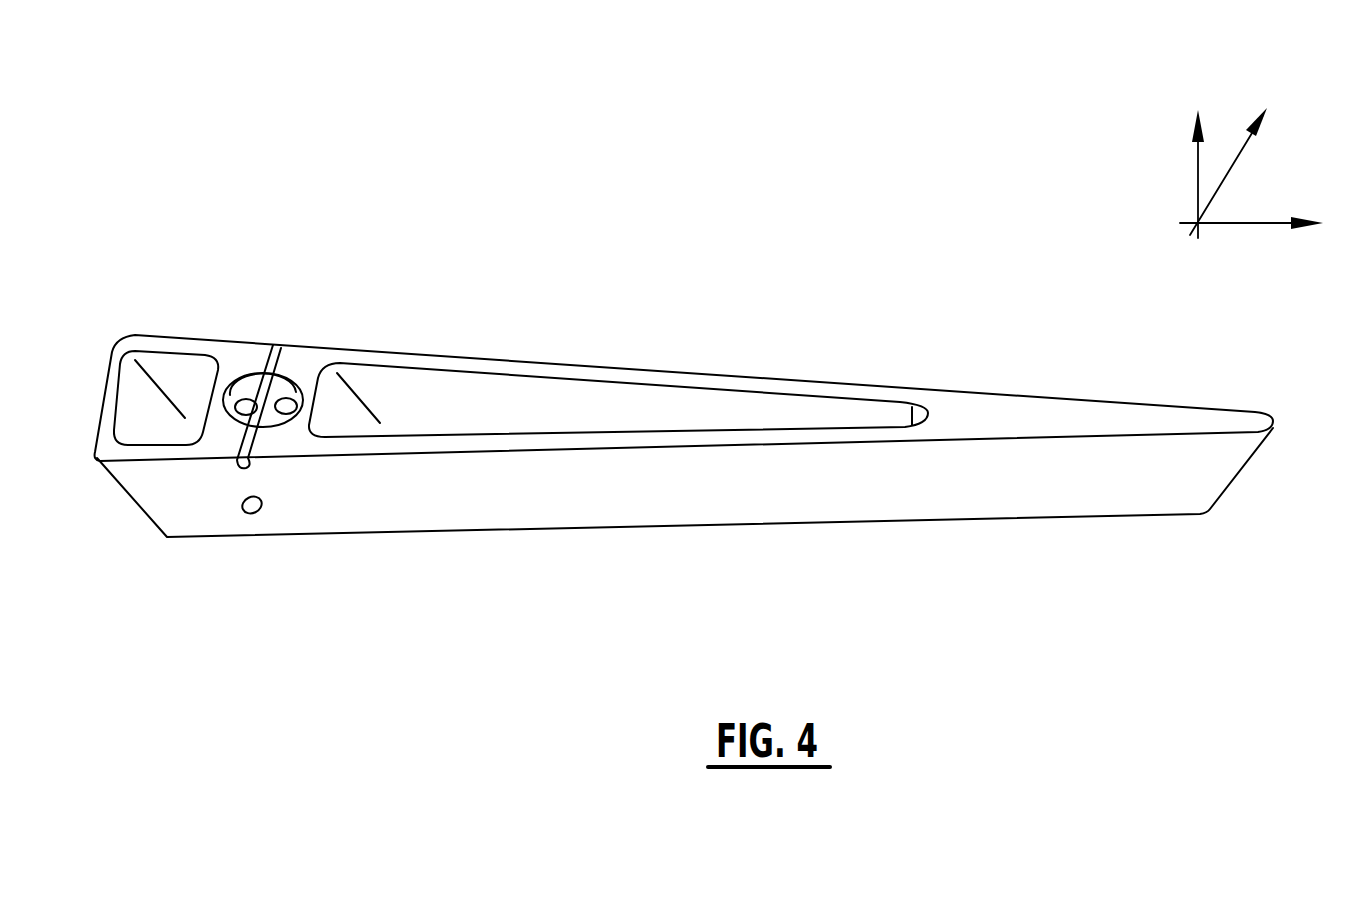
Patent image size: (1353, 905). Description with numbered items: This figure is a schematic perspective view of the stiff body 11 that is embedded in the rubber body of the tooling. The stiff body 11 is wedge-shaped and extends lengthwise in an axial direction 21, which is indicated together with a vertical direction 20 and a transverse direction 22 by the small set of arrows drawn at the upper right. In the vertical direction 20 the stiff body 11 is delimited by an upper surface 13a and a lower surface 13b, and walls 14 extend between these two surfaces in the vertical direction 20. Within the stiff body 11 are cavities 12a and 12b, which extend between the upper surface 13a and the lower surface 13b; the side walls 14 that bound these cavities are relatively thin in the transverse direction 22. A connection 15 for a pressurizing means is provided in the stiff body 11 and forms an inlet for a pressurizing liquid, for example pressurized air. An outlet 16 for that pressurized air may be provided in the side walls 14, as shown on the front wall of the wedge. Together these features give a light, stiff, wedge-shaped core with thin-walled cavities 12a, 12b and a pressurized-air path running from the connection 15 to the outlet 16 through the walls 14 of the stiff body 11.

The stiff body 11 is at (753, 533).
The cavity 12a is at (458, 397).
The cavity 12b is at (205, 373).
The upper surface 13a is at (1135, 422).
The lower surface 13b is at (1062, 515).
The walls 14 is at (865, 392).
The connection 15 is at (293, 387).
The outlet 16 is at (248, 508).
The vertical direction 20 is at (1197, 170).
The axial direction 21 is at (1258, 223).
The transverse direction 22 is at (1235, 167).